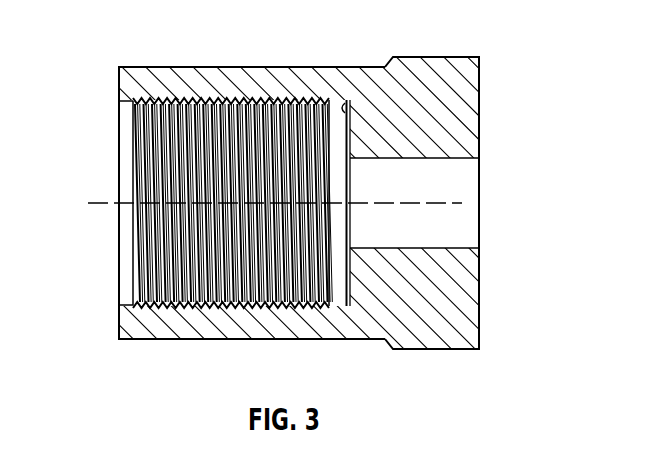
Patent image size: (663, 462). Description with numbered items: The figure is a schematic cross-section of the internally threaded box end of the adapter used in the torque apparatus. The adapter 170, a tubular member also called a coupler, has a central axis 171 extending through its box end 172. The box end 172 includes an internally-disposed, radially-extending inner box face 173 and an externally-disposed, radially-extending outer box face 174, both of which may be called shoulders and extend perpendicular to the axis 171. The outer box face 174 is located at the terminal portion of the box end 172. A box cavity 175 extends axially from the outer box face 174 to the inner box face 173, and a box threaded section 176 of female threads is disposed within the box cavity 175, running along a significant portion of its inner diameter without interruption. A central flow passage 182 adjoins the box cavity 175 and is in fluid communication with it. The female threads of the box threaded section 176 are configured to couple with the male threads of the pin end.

The adapter 170 is at (138, 75).
The central axis 171 is at (485, 202).
The box end 172 is at (280, 77).
The inner box face 173 is at (345, 100).
The outer box face 174 is at (118, 84).
The box cavity 175 is at (124, 263).
The box threaded section 176 is at (216, 100).
The central flow passage 182 is at (471, 159).